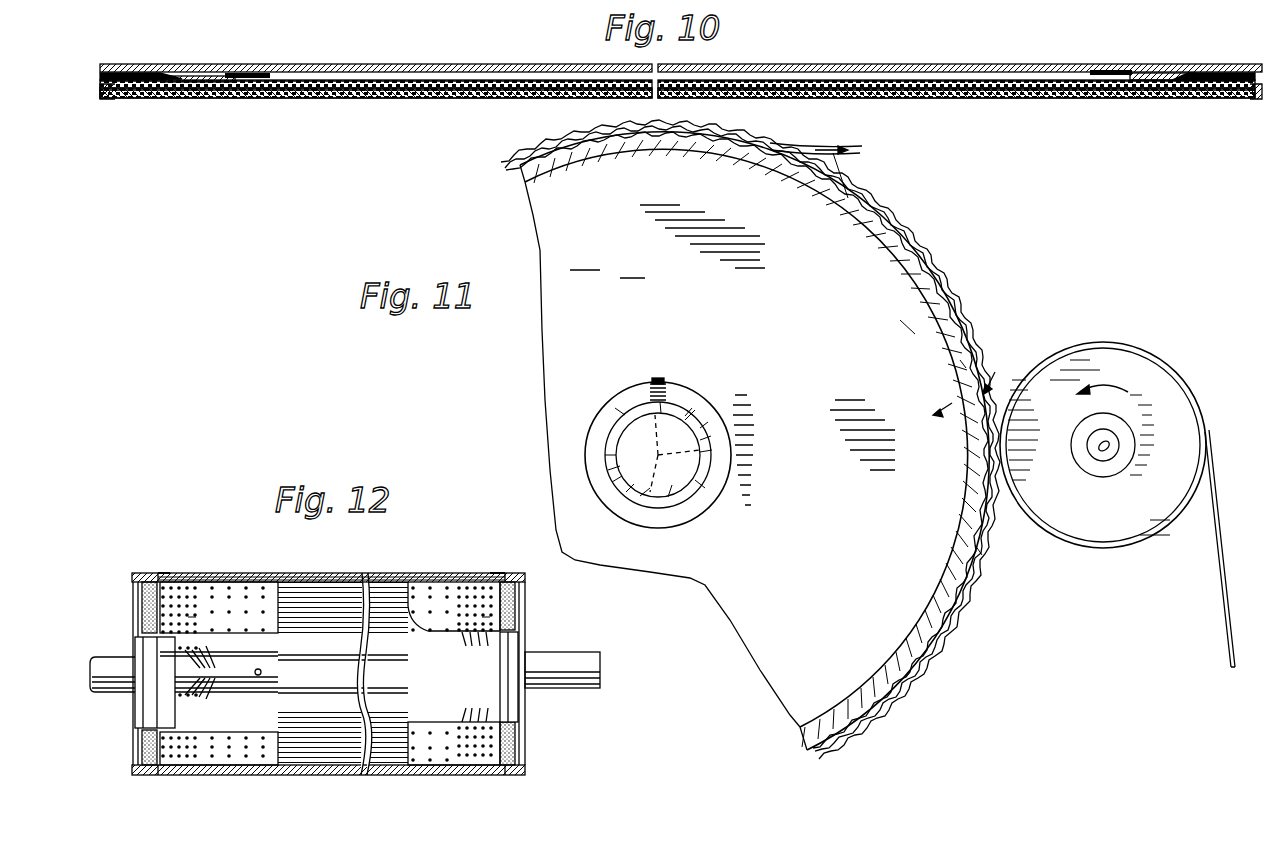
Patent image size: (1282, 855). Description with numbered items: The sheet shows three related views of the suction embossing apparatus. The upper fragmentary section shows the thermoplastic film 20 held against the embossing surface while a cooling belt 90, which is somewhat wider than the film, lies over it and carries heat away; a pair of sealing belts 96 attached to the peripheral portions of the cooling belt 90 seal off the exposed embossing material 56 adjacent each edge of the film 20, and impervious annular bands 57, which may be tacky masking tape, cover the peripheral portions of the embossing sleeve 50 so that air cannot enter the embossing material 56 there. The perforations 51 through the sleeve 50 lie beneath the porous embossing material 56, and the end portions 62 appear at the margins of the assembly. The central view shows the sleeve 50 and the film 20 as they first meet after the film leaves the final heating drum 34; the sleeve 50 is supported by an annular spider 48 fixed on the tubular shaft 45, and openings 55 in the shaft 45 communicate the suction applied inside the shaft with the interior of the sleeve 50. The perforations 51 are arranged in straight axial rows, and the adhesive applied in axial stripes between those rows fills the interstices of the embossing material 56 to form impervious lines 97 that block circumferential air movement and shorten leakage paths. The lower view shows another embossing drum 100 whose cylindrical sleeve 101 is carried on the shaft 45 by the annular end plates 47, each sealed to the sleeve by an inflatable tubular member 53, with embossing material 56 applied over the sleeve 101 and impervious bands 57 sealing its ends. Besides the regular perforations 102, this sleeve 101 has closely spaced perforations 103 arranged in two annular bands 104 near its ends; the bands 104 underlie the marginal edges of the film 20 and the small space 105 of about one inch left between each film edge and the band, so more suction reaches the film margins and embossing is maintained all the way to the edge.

In FIG. 10, the thermoplastic film 20 is at (490, 85).
In FIG. 11, the thermoplastic film 20 is at (858, 150).
In FIG. 12, the thermoplastic film 20 is at (178, 576).
In FIG. 11, the final heating drum 34 is at (1175, 395).
In FIG. 11, the tubular shaft 45 is at (617, 418).
In FIG. 12, the tubular shaft 45 is at (120, 684).
In FIG. 12, the annular end plates 47 is at (140, 735).
In FIG. 11, the annular spiders 48 is at (548, 362).
In FIG. 10, the embossing sleeve 50 is at (346, 96).
In FIG. 11, the embossing sleeve 50 is at (580, 170).
In FIG. 10, the perforations 51 is at (950, 95).
In FIG. 11, the perforations 51 is at (925, 331).
In FIG. 12, the inflatable tubular member 53 is at (150, 752).
In FIG. 11, the openings 55 is at (612, 460).
In FIG. 12, the openings 55 is at (262, 672).
In FIG. 10, the embossing material 56 is at (455, 98).
In FIG. 11, the embossing material 56 is at (962, 592).
In FIG. 12, the embossing material 56 is at (233, 576).
In FIG. 10, the impervious annular bands 57 is at (108, 92).
In FIG. 12, the impervious annular bands 57 is at (150, 575).
In FIG. 10, the end portion 62 is at (116, 68).
In FIG. 10, the cooling belt 90 is at (835, 64).
In FIG. 10, the sealing belts 96 is at (200, 82).
In FIG. 11, the impervious lines 97 is at (870, 237).
In FIG. 12, the embossing drum 100 is at (270, 576).
In FIG. 12, the cylindrical sleeve 101 is at (205, 590).
In FIG. 12, the perforations 102 is at (268, 630).
In FIG. 12, the perforations 103 is at (338, 677).
In FIG. 12, the annular bands 104 is at (176, 617).
In FIG. 12, the space 105 is at (168, 576).